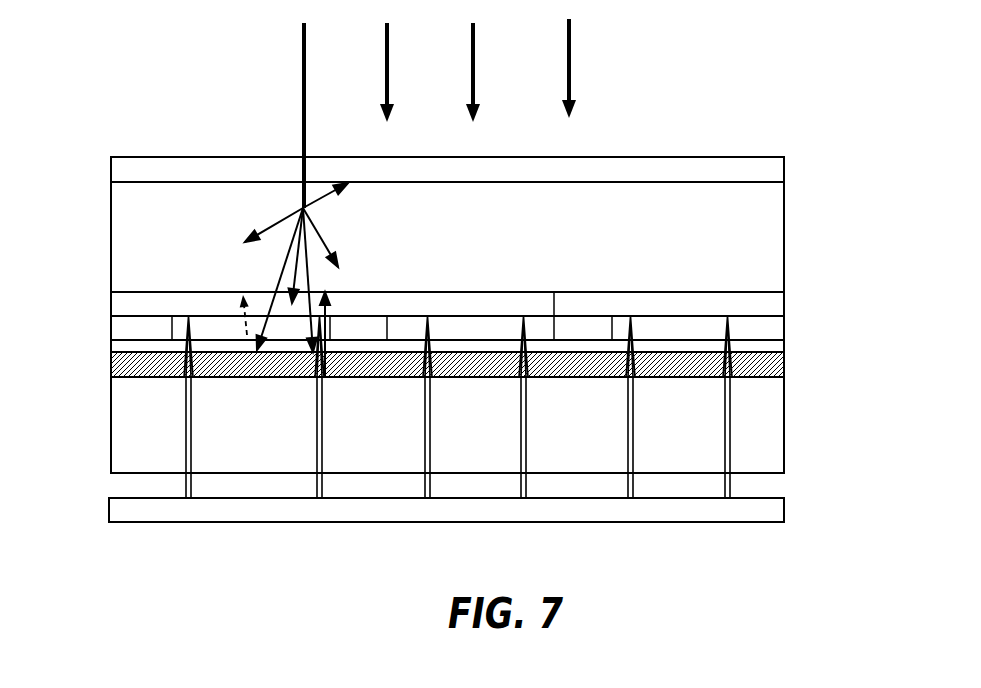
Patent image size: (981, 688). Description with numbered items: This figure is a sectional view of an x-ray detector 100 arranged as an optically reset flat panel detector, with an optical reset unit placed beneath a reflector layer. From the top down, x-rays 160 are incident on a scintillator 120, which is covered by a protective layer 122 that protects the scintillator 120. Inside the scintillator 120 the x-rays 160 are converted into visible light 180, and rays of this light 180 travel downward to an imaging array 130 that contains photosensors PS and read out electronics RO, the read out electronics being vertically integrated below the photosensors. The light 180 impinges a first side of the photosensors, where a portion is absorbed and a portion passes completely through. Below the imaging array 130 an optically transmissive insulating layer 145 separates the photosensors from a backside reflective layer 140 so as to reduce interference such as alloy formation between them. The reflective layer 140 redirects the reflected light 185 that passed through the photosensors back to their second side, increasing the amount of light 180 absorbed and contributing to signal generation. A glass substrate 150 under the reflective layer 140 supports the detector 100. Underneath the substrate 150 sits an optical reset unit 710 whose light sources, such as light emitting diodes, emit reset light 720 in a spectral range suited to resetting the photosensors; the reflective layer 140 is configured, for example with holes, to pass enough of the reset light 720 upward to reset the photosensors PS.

The x-ray detector 100 is at (980, 110).
The protective layer 122 is at (784, 170).
The scintillator 120 is at (784, 207).
The imaging array 130 is at (790, 293).
The optically transmissive insulating layer 145 is at (784, 347).
The reflective layer 140 is at (784, 367).
The substrate 150 is at (784, 403).
The reflected light 185 is at (243, 328).
The reset light 720 is at (628, 467).
The optical reset unit 710 is at (784, 510).
The x-rays 160 is at (496, 113).
The visible light 180 is at (358, 280).